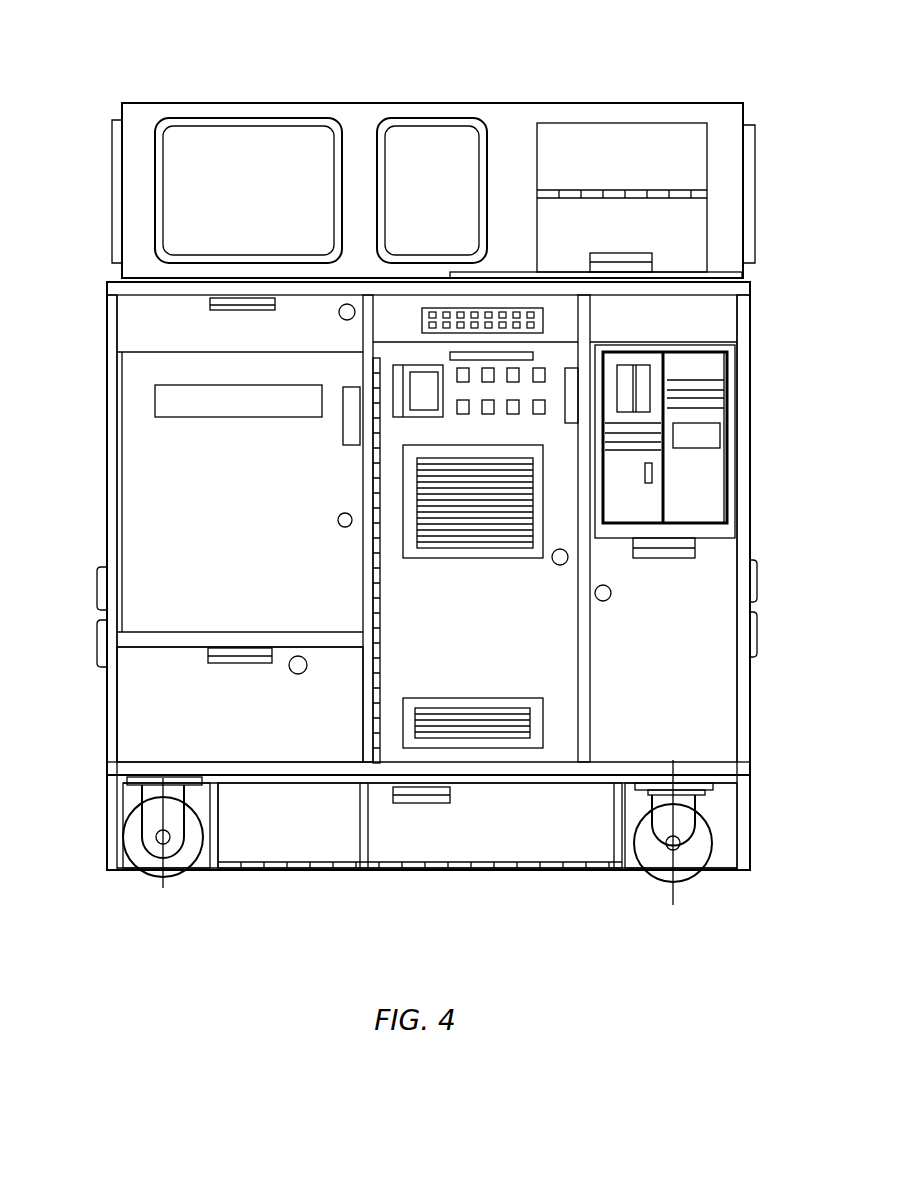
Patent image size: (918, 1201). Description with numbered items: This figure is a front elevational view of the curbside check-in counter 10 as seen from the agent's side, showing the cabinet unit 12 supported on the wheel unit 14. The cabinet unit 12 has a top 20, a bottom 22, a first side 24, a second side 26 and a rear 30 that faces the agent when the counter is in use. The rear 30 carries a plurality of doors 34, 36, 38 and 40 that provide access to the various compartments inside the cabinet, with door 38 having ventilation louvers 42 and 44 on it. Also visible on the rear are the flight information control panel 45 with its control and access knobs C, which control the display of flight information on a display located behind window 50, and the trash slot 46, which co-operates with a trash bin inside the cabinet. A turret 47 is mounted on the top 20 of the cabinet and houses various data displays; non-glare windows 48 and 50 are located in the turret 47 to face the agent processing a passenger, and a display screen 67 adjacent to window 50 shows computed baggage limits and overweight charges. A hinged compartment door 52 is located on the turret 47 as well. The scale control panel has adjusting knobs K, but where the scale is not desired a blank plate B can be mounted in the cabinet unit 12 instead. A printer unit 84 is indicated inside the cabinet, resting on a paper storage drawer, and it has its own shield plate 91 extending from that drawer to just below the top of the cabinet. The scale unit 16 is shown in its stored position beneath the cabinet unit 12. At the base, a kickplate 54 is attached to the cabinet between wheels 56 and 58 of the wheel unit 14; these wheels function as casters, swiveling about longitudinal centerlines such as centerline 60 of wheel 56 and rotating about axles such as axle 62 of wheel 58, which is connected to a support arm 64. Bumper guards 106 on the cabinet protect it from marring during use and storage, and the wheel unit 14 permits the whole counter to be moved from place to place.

The curbside check-in counter 10 is at (100, 85).
The cabinet unit 12 is at (100, 342).
The wheel unit 14 is at (125, 787).
The scale unit 16 is at (202, 792).
The top 20 is at (750, 283).
The bottom 22 is at (745, 820).
The first side 24 is at (752, 433).
The second side 26 is at (105, 458).
The rear 30 is at (755, 575).
The door 34 is at (220, 544).
The door 36 is at (245, 717).
The door 38 is at (473, 649).
The door 40 is at (658, 667).
The ventilation louvers 42 is at (452, 722).
The ventilation louvers 44 is at (470, 532).
The flight information control panel 45 is at (385, 323).
The trash slot 46 is at (532, 352).
The turret 47 is at (497, 100).
The non-glare window 48 is at (257, 209).
The non-glare window 50 is at (443, 209).
The hinged compartment door 52 is at (650, 158).
The kickplate 54 is at (295, 835).
The wheel 56 is at (172, 860).
The wheel 58 is at (655, 865).
The centerline 60 is at (163, 778).
The axle 62 is at (688, 850).
The support arm 64 is at (673, 790).
The display screen 67 is at (492, 268).
The printer unit 84 is at (712, 400).
The shield plate 91 is at (707, 485).
The bumper guards 106 is at (97, 585).
The blank plate B is at (665, 441).
The control and access knobs C is at (530, 308).
The adjusting knobs K is at (255, 270).